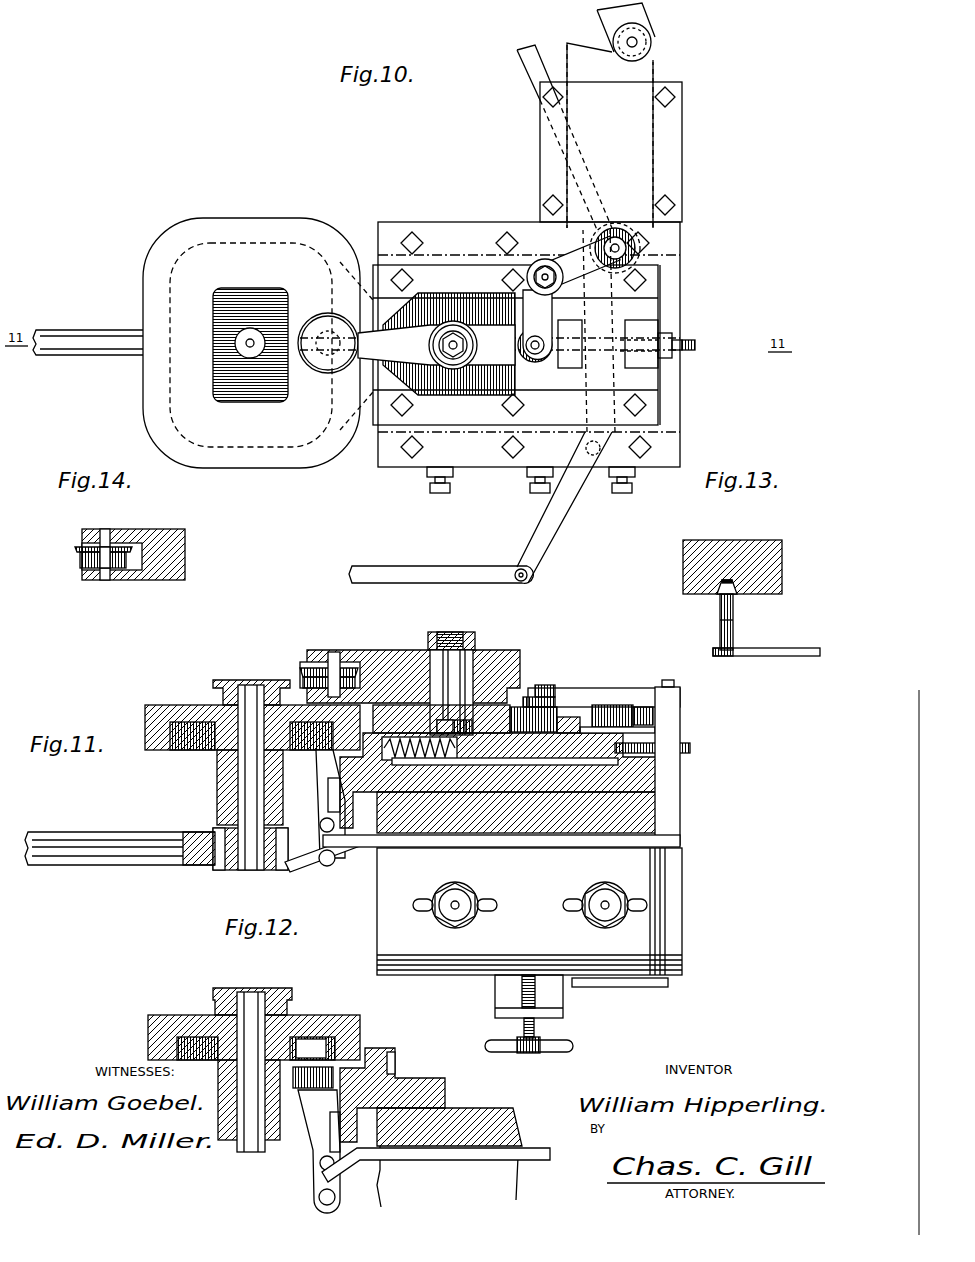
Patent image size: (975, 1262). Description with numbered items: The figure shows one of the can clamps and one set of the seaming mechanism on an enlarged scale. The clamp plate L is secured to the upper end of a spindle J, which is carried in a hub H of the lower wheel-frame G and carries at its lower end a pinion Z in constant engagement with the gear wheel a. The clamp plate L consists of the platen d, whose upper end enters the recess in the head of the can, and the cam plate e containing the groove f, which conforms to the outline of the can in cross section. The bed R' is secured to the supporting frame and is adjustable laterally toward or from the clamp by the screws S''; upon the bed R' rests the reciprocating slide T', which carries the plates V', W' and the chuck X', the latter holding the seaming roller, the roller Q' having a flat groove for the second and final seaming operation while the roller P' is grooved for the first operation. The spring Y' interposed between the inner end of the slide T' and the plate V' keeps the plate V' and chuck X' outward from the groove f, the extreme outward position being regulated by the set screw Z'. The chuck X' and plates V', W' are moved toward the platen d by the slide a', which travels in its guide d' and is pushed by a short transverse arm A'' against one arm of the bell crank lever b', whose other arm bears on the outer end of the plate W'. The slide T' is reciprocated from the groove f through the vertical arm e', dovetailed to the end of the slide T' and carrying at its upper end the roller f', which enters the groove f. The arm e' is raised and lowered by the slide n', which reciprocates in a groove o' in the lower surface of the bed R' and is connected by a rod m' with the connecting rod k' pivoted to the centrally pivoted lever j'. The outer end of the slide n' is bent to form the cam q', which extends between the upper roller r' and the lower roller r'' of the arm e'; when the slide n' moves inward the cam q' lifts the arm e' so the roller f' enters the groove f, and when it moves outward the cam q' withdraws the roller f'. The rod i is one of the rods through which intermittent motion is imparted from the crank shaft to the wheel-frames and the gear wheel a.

In FIG. 10, the clamp plate L is at (251, 333).
In FIG. 11, the clamp plate L is at (252, 716).
In FIG. 12, the clamp plate L is at (254, 1027).
In FIG. 10, the cam plate e is at (310, 362).
In FIG. 11, the cam plate e is at (135, 716).
In FIG. 12, the cam plate e is at (135, 1034).
In FIG. 10, the platen d is at (250, 345).
In FIG. 11, the platen d is at (251, 683).
In FIG. 12, the platen d is at (252, 990).
In FIG. 10, the lower wheel-frame G is at (103, 331).
In FIG. 11, the lower wheel-frame G is at (120, 839).
In FIG. 10, the seaming roller Q' is at (328, 331).
In FIG. 11, the seaming roller Q' is at (323, 673).
In FIG. 10, the reciprocating slide T' is at (522, 357).
In FIG. 11, the reciprocating slide T' is at (523, 780).
In FIG. 12, the reciprocating slide T' is at (392, 1095).
In FIG. 10, the bed R' is at (683, 345).
In FIG. 13, the bed R' is at (744, 567).
In FIG. 11, the bed R' is at (543, 762).
In FIG. 12, the bed R' is at (461, 1157).
In FIG. 10, the plate W' is at (449, 355).
In FIG. 11, the plate W' is at (459, 700).
In FIG. 10, the chuck X' is at (436, 345).
In FIG. 14, the chuck X' is at (146, 554).
In FIG. 11, the chuck X' is at (413, 681).
In FIG. 10, the bell crank lever b' is at (569, 299).
In FIG. 11, the bell crank lever b' is at (595, 702).
In FIG. 10, the slide a' is at (618, 158).
In FIG. 10, the short transverse arm A'' is at (637, 32).
In FIG. 10, the guide d' is at (621, 152).
In FIG. 10, the rod i is at (527, 72).
In FIG. 10, the plate V' is at (564, 354).
In FIG. 11, the plate V' is at (571, 736).
In FIG. 10, the set screw Z' is at (661, 341).
In FIG. 11, the set screw Z' is at (665, 742).
In FIG. 10, the centrally pivoted lever j' is at (566, 406).
In FIG. 10, the connecting rod k' is at (441, 564).
In FIG. 13, the connecting rod k' is at (766, 662).
In FIG. 11, the connecting rod k' is at (576, 1014).
In FIG. 13, the groove o' is at (744, 596).
In FIG. 11, the groove o' is at (517, 835).
In FIG. 13, the slide n' is at (715, 598).
In FIG. 11, the slide n' is at (529, 906).
In FIG. 12, the slide n' is at (436, 1165).
In FIG. 13, the rod m' is at (740, 622).
In FIG. 11, the rod m' is at (543, 911).
In FIG. 14, the seaming roller P' is at (88, 557).
In FIG. 11, the cam groove f is at (251, 748).
In FIG. 12, the cam groove f is at (256, 1048).
In FIG. 11, the hub H is at (218, 800).
In FIG. 12, the hub H is at (218, 1078).
In FIG. 11, the pinion Z is at (246, 861).
In FIG. 11, the spindle J is at (251, 789).
In FIG. 12, the spindle J is at (248, 1152).
In FIG. 11, the gear wheel a is at (199, 838).
In FIG. 11, the roller f' is at (294, 765).
In FIG. 12, the roller f' is at (308, 1089).
In FIG. 11, the vertical arm e' is at (320, 804).
In FIG. 12, the vertical arm e' is at (318, 1151).
In FIG. 11, the roller r' is at (314, 828).
In FIG. 12, the roller r' is at (313, 1164).
In FIG. 11, the roller r'' is at (336, 868).
In FIG. 12, the roller r'' is at (312, 1199).
In FIG. 11, the cam q' is at (322, 864).
In FIG. 12, the cam q' is at (353, 1180).
In FIG. 11, the spring Y' is at (370, 795).
In FIG. 11, the nut S'' is at (531, 900).